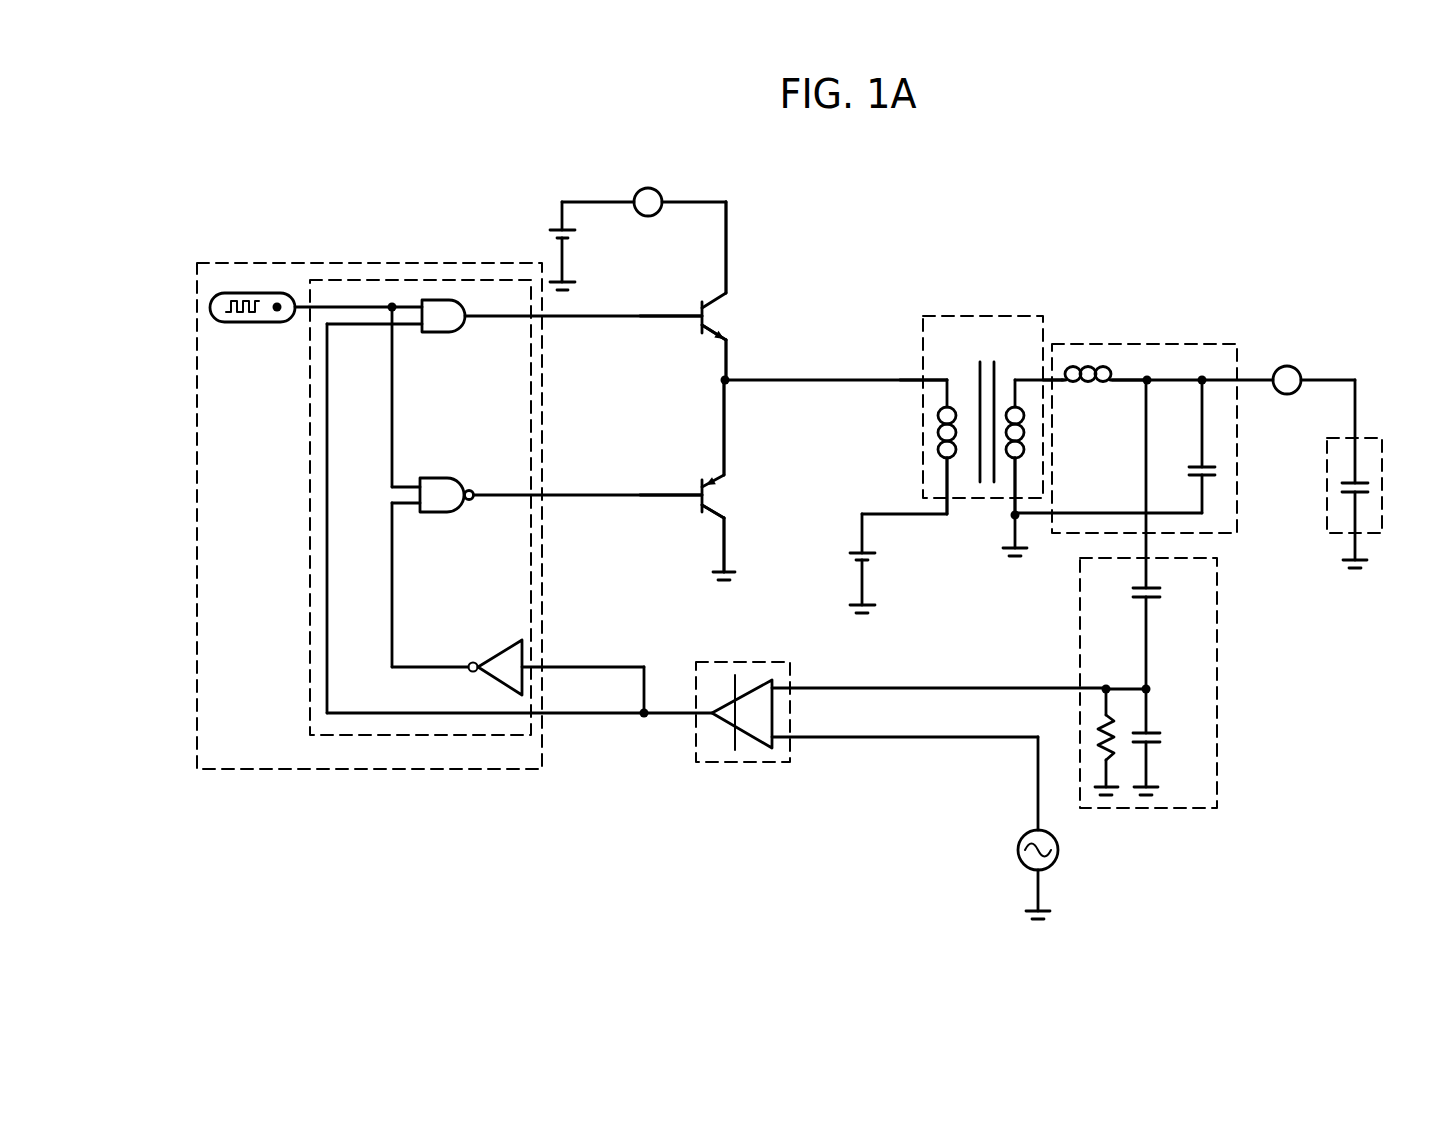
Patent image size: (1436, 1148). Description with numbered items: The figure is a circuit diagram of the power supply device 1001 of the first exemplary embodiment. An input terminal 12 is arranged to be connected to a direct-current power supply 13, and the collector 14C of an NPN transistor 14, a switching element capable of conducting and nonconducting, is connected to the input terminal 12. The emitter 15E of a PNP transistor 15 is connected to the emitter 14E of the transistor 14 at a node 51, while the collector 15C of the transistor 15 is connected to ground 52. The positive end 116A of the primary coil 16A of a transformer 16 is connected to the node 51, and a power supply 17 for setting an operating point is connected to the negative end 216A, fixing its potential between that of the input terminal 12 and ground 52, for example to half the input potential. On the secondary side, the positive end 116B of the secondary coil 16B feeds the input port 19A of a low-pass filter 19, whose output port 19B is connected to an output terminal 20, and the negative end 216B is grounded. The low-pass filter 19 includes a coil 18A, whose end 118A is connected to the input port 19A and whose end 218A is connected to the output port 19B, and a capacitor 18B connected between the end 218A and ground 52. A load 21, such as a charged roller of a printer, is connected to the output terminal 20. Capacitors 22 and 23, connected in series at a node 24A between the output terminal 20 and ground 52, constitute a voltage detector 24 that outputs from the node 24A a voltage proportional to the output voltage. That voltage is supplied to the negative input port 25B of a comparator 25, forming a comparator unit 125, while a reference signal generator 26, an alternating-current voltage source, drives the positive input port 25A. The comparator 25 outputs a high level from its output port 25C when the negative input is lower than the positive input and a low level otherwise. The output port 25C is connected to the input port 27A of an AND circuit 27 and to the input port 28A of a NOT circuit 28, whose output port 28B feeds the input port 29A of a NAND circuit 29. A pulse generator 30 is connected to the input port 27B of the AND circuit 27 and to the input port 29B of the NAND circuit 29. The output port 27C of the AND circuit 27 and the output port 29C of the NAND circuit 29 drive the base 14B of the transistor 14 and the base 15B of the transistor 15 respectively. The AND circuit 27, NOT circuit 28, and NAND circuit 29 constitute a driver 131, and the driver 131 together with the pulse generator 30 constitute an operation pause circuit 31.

The power supply device 1001 is at (1320, 230).
The driver 131 is at (307, 655).
The operation pause circuit 31 is at (382, 262).
The pulse generator 30 is at (248, 322).
The AND circuit 27 is at (440, 333).
The input port 27A is at (398, 326).
The input port 27B is at (407, 307).
The output port 27C is at (475, 320).
The NAND circuit 29 is at (442, 478).
The input port 29A is at (393, 505).
The input port 29B is at (407, 485).
The output port 29C is at (495, 497).
The NOT circuit 28 is at (503, 650).
The input port 28A is at (543, 665).
The output port 28B is at (445, 667).
The direct-current power supply 13 is at (552, 223).
The input terminal 12 is at (647, 217).
The NPN transistor 14 is at (728, 317).
The base 14B is at (673, 320).
The collector 14C is at (725, 278).
The emitter 14E is at (730, 347).
The node 51 is at (720, 382).
The PNP transistor 15 is at (723, 497).
The base 15B is at (680, 495).
The collector 15C is at (723, 515).
The emitter 15E is at (727, 473).
The ground 52 is at (712, 578).
The power supply 17 is at (847, 558).
The transformer 16 is at (947, 315).
The primary coil 16A is at (937, 440).
The positive end 116A is at (943, 381).
The negative end 216A is at (947, 487).
The secondary coil 16B is at (1013, 402).
The positive end 116B is at (1022, 377).
The negative end 216B is at (1013, 485).
The low-pass filter 19 is at (1165, 342).
The input port 19A is at (1052, 383).
The output port 19B is at (1240, 377).
The coil 18A is at (1092, 364).
The end 118A is at (1058, 377).
The end 218A is at (1125, 376).
The capacitor 18B is at (1213, 473).
The output terminal 20 is at (1287, 364).
The load 21 is at (1377, 437).
The voltage detector 24 is at (1218, 675).
The node 24A is at (1143, 685).
The capacitor 22 is at (1157, 595).
The capacitor 23 is at (1162, 737).
The comparator 25 is at (763, 682).
The positive input port 25A is at (785, 738).
The negative input port 25B is at (787, 687).
The output port 25C is at (700, 715).
The comparator unit 125 is at (723, 763).
The reference signal generator 26 is at (1015, 848).